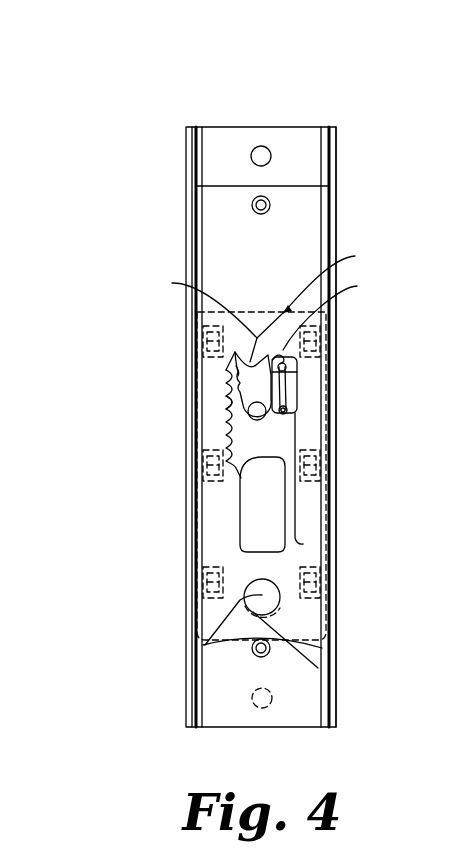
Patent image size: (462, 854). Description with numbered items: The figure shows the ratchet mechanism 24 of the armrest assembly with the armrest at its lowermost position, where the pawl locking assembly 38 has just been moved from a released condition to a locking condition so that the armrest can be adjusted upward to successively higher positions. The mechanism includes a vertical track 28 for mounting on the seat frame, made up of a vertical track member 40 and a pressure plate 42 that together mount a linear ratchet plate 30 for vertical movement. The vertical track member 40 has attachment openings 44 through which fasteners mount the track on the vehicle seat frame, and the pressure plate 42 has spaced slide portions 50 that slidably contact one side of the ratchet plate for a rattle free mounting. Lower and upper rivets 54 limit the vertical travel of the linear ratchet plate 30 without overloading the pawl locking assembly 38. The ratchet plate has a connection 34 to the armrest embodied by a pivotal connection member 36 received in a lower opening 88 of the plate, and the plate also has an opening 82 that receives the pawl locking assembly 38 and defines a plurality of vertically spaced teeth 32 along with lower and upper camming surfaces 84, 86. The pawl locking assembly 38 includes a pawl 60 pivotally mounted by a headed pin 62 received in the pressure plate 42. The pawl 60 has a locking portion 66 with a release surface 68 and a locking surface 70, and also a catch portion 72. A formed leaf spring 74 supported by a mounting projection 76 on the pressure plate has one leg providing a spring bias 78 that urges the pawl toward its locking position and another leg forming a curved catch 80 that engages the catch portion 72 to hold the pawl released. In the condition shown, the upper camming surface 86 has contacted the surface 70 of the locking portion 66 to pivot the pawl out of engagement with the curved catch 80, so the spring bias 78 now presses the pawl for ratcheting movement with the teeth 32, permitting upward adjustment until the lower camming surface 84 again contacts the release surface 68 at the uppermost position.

The ratchet mechanism 24 is at (343, 333).
The vertical track 28 is at (337, 172).
The linear ratchet plate 30 is at (333, 278).
The vertically spaced teeth 32 is at (230, 437).
The connection 34 is at (290, 616).
The pivotal connection member 36 is at (205, 645).
The pawl locking assembly 38 is at (220, 408).
The vertical track member 40 is at (337, 222).
The pressure plate 42 is at (294, 218).
The attachment openings 44 is at (258, 147).
The slide portions 50 is at (196, 333).
The rivets 54 is at (266, 200).
The pawl 60 is at (240, 387).
The headed pin 62 is at (268, 418).
The locking portion 66 is at (201, 305).
The release surface 68 is at (232, 374).
The locking surface 70 is at (238, 357).
The catch portion 72 is at (297, 380).
The formed leaf spring 74 is at (297, 390).
The mounting projection 76 is at (287, 372).
The spring bias 78 is at (288, 412).
The curved catch 80 is at (328, 318).
The opening 82 is at (303, 544).
The lower camming surface 84 is at (251, 478).
The upper camming surface 86 is at (258, 338).
The lower opening 88 is at (318, 668).